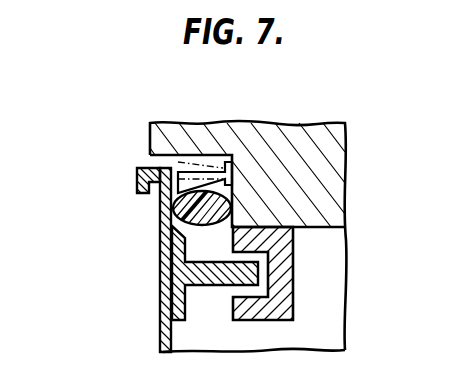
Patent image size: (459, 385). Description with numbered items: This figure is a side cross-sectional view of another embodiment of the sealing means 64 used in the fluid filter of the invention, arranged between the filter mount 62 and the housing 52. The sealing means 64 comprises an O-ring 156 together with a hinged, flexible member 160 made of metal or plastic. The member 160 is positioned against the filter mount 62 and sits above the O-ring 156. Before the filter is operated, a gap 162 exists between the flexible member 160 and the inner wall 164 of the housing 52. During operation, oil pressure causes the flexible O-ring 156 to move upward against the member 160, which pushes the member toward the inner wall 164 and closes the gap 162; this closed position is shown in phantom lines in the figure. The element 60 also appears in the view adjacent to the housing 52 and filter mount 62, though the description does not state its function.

The housing 52 is at (162, 342).
The retainer ring 60 is at (312, 278).
The filter mount 62 is at (344, 154).
The sealing means 64 is at (125, 167).
The O-ring 156 is at (174, 209).
The hinged, flexible member 160 is at (176, 161).
The gap 162 is at (178, 193).
The inner wall 164 is at (176, 229).